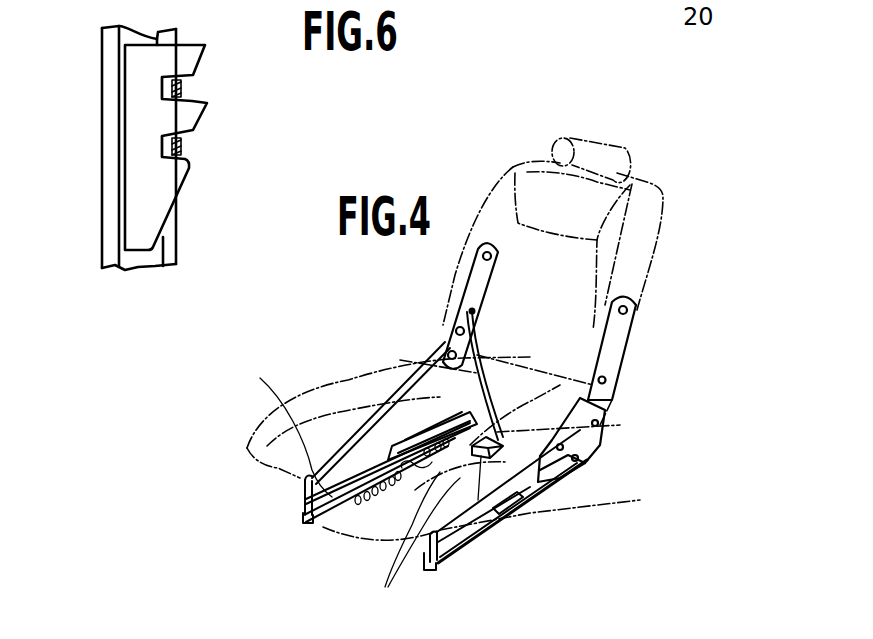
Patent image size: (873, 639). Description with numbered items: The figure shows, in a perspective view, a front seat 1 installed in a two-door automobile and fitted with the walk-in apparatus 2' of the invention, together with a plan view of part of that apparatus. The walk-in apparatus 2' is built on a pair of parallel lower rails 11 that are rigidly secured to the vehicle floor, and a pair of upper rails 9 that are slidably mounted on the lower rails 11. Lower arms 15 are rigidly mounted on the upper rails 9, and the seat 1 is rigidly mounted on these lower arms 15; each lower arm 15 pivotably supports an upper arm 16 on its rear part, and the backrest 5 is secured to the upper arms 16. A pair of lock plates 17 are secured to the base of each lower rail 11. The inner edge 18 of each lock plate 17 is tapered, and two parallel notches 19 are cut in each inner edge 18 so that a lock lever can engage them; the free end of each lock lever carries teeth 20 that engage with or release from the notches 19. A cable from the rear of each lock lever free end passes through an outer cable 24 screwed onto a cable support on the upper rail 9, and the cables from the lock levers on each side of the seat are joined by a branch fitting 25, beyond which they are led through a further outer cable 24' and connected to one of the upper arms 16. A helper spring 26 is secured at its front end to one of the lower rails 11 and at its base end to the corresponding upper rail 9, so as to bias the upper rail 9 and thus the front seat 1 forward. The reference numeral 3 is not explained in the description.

In FIG. 4, the front seat 1 is at (400, 358).
In FIG. 4, the walk-in apparatus 2' is at (310, 551).
In FIG. 4, the seat slide rail assembly 3 is at (527, 510).
In FIG. 4, the backrest 5 is at (630, 255).
In FIG. 6, the upper rail 9 is at (113, 182).
In FIG. 4, the upper rail 9 is at (303, 512).
In FIG. 6, the lower rail 11 is at (137, 263).
In FIG. 4, the lower rail 11 is at (308, 527).
In FIG. 4, the lower arm 15 is at (308, 473).
In FIG. 4, the upper arm 16 is at (462, 318).
In FIG. 6, the lock plate 17 is at (160, 192).
In FIG. 6, the inner edge 18 is at (188, 116).
In FIG. 6, the notch 19 is at (162, 87).
In FIG. 6, the teeth 20 is at (182, 88).
In FIG. 4, the outer cable 24 is at (405, 540).
In FIG. 4, the outer cable 24' is at (407, 401).
In FIG. 4, the branch fitting 25 is at (553, 437).
In FIG. 4, the helper spring 26 is at (338, 432).